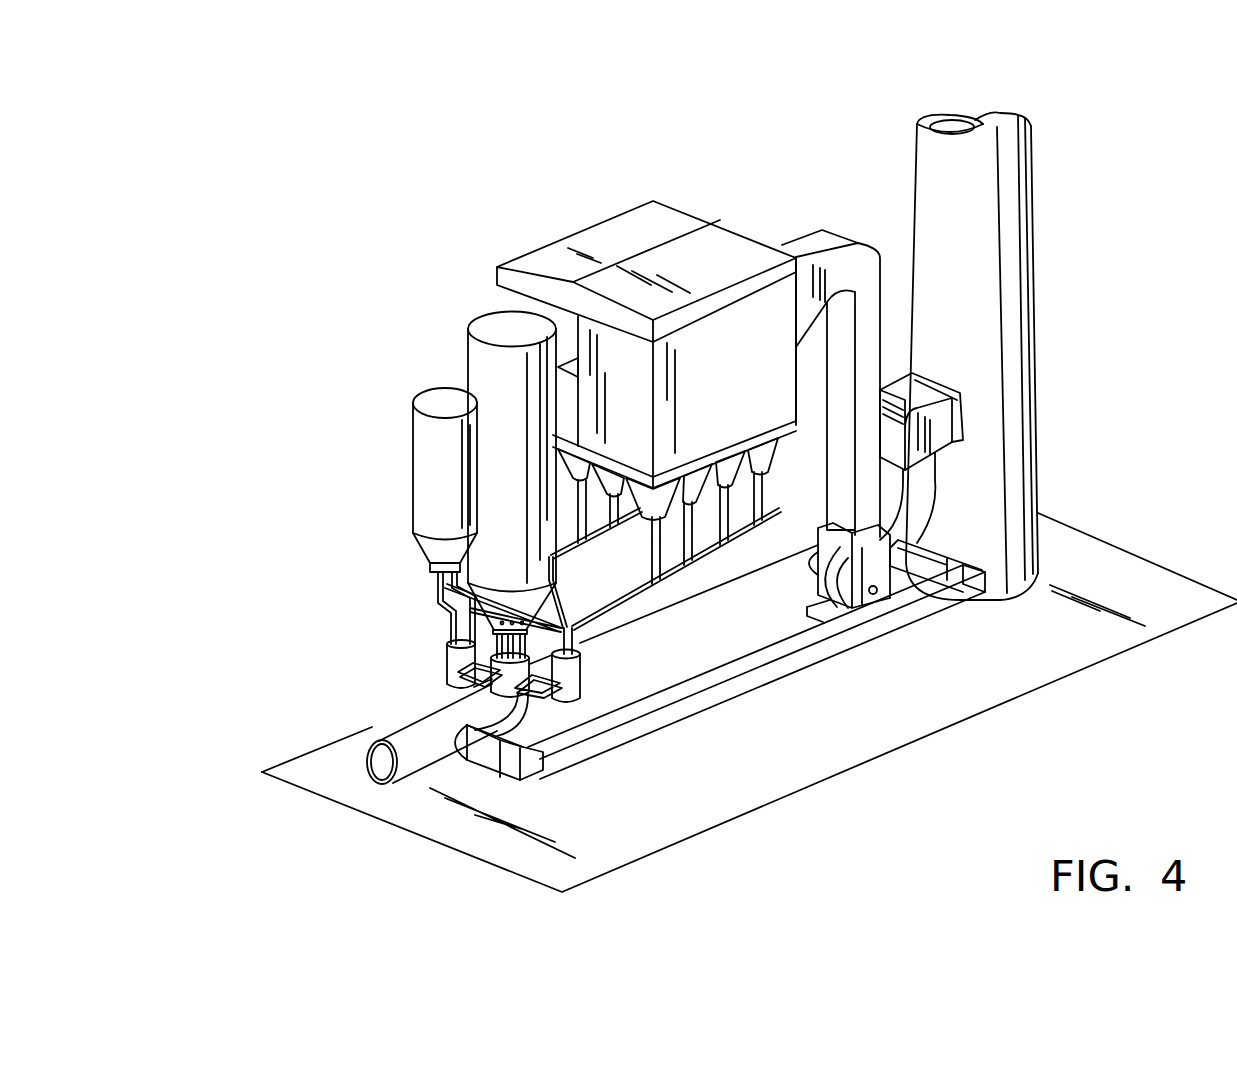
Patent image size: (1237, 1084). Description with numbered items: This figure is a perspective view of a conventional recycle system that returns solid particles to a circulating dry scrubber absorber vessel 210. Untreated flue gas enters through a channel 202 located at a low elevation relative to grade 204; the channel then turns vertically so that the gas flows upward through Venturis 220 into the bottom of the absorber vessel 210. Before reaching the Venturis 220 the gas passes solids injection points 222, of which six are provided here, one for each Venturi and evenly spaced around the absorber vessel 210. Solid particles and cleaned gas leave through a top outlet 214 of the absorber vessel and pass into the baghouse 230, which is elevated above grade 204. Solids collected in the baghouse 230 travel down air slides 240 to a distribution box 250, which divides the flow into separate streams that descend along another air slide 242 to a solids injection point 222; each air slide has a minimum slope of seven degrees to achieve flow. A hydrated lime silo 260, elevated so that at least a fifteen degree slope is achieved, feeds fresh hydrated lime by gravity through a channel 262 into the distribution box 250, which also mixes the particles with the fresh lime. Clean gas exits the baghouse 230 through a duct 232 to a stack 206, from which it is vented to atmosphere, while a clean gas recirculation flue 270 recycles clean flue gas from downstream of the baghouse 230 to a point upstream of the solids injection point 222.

The channel 202 is at (365, 735).
The grade 204 is at (347, 805).
The stack 206 is at (993, 277).
The circulating dry scrubber absorber vessel 210 is at (493, 358).
The top outlet 214 is at (557, 380).
The Venturis 220 is at (505, 650).
The solids injection points 222 is at (457, 683).
The baghouse 230 is at (720, 243).
The duct 232 is at (858, 272).
The air slides 240 is at (707, 557).
The air slide 242 is at (573, 697).
The distribution box 250 is at (583, 657).
The hydrated lime silo 260 is at (447, 465).
The channel 262 is at (440, 604).
The clean gas recirculation flue 270 is at (697, 693).